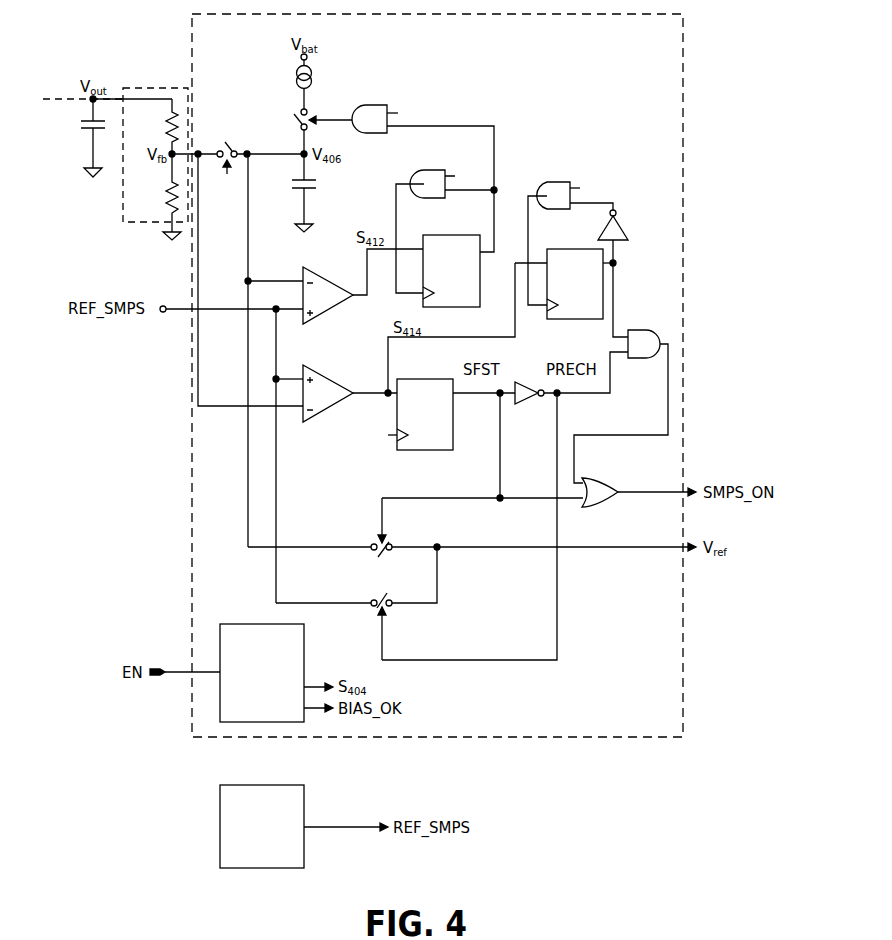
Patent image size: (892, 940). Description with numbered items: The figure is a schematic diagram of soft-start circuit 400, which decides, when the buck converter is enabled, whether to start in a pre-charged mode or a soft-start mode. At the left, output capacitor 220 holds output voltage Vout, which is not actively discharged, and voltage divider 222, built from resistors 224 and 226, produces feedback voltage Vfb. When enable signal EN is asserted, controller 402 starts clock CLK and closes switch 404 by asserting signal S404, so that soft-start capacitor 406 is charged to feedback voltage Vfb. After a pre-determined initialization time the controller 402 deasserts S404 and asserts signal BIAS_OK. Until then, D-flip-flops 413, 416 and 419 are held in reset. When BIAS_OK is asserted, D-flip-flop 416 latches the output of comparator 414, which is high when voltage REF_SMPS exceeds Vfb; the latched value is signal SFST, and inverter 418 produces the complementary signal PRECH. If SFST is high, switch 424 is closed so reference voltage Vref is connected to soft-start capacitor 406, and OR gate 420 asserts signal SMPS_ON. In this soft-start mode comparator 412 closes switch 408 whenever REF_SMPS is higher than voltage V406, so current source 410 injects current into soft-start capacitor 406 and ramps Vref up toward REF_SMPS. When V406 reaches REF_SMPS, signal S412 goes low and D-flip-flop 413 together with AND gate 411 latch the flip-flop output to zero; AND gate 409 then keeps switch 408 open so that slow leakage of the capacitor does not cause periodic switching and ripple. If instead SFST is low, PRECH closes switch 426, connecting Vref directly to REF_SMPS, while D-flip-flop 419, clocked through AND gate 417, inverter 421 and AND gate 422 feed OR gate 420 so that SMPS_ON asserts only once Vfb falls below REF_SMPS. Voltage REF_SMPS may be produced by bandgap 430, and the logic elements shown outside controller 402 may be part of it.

The soft-start circuit 400 is at (192, 25).
The controller 402 is at (227, 624).
The switch 404 is at (228, 146).
The soft-start capacitor 406 is at (313, 190).
The switch 408 is at (296, 118).
The AND gate 409 is at (373, 106).
The current source 410 is at (296, 73).
The AND gate 411 is at (430, 170).
The comparator 412 is at (329, 282).
The D-flip-flop 413 is at (444, 235).
The comparator 414 is at (329, 380).
The D-flip-flop 416 is at (417, 379).
The AND gate 417 is at (555, 182).
The inverter 418 is at (521, 384).
The D-flip-flop 419 is at (567, 249).
The OR gate 420 is at (597, 480).
The inverter 421 is at (620, 223).
The AND gate 422 is at (634, 331).
The switch 424 is at (384, 560).
The switch 426 is at (379, 597).
The bandgap 430 is at (238, 785).
The output capacitor 220 is at (83, 126).
The voltage divider 222 is at (126, 88).
The resistor 224 is at (167, 127).
The resistor 226 is at (167, 190).